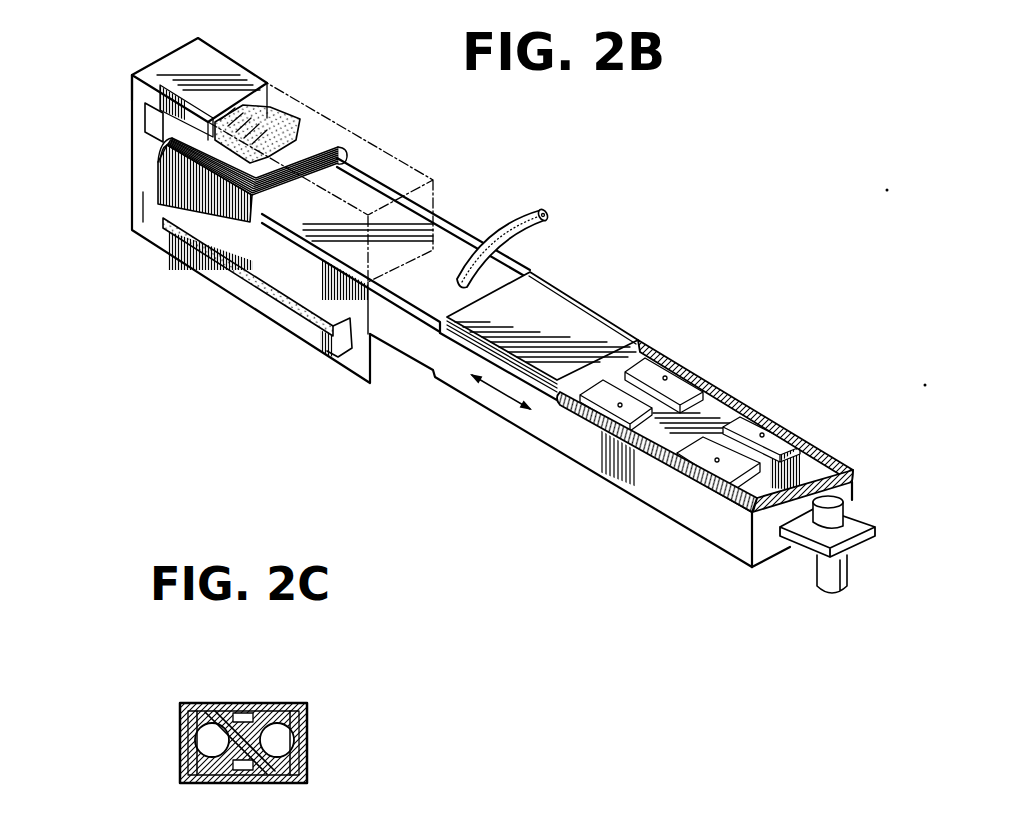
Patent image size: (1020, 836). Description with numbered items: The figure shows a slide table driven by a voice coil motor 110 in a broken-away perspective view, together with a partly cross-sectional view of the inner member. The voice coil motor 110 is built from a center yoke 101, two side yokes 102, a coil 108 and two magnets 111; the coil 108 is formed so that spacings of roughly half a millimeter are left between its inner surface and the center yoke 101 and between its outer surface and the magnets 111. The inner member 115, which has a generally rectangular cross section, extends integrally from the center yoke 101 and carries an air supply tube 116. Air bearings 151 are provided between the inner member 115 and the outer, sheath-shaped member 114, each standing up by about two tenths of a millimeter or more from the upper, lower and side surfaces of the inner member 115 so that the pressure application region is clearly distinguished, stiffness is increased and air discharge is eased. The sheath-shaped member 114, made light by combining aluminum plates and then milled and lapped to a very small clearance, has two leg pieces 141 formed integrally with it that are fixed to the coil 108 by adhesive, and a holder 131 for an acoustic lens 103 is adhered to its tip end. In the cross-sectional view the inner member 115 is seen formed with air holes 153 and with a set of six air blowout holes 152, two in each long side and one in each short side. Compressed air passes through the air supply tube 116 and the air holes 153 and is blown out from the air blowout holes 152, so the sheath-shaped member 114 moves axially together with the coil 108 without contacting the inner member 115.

In FIG. 2B, the center yoke 101 is at (142, 163).
In FIG. 2B, the side yoke 102 is at (228, 74).
In FIG. 2B, the acoustic lens 103 is at (840, 493).
In FIG. 2B, the coil 108 is at (147, 118).
In FIG. 2B, the voice coil motor 110 is at (147, 60).
In FIG. 2B, the magnet 111 is at (281, 118).
In FIG. 2B, the outer member / sheath-shaped member 114 is at (603, 325).
In FIG. 2C, the outer member / sheath-shaped member 114 is at (308, 733).
In FIG. 2B, the inner member 115 is at (493, 282).
In FIG. 2C, the inner member 115 is at (263, 713).
In FIG. 2B, the air supply tube 116 is at (503, 224).
In FIG. 2B, the holder 131 is at (820, 530).
In FIG. 2B, the leg piece 141 is at (293, 268).
In FIG. 2B, the air bearing 151 is at (700, 455).
In FIG. 2B, the air blowout hole 152 is at (620, 405).
In FIG. 2C, the air blowout hole 152 is at (213, 703).
In FIG. 2C, the air hole 153 is at (283, 748).